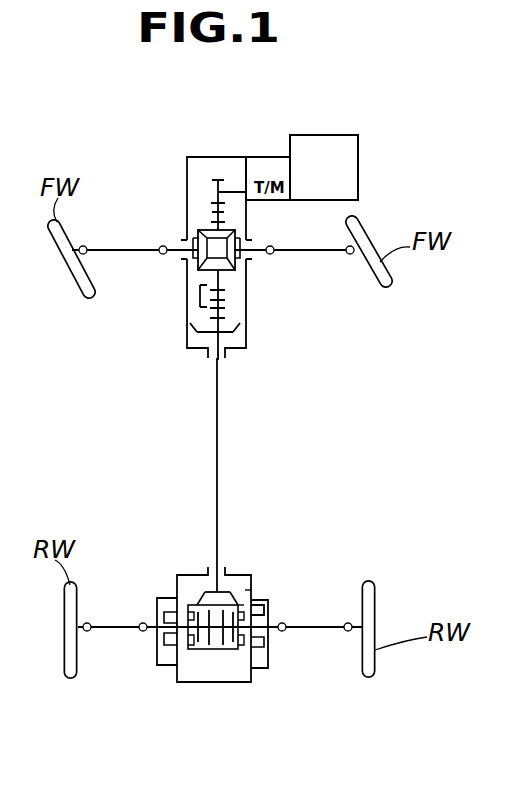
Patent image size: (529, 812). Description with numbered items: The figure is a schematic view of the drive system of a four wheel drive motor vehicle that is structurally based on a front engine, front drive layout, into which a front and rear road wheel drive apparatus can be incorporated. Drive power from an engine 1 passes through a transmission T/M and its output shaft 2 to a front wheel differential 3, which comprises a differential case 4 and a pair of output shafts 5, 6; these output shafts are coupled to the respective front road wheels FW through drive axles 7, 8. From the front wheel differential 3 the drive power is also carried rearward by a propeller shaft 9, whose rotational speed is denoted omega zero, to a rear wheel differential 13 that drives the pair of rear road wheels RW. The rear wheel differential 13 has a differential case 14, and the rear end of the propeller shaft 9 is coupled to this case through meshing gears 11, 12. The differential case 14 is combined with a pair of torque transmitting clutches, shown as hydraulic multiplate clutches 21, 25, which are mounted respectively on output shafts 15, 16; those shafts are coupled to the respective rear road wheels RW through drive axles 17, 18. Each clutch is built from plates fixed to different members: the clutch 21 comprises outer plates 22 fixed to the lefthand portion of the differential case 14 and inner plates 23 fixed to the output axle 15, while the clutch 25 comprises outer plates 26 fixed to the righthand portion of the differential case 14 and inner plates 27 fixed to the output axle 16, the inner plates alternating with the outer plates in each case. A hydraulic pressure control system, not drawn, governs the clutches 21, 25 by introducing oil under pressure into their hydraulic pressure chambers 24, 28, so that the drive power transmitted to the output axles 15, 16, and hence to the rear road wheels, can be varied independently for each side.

The engine 1 is at (316, 134).
The output shaft 2 is at (231, 190).
The front wheel differential 3 is at (196, 217).
The differential case 4 is at (240, 238).
The output shaft 5 is at (172, 253).
The output shaft 6 is at (264, 253).
The drive axle 7 is at (114, 252).
The drive axle 8 is at (322, 253).
The propeller shaft 9 is at (219, 423).
The meshing gear 11 is at (232, 597).
The meshing gear 12 is at (203, 592).
The rear wheel differential 13 is at (209, 690).
The differential case 14 is at (217, 665).
The output shaft 15 is at (154, 632).
The output shaft 16 is at (275, 624).
The drive axle 17 is at (108, 630).
The drive axle 18 is at (318, 628).
The hydraulic multiplate clutch 21 is at (185, 663).
The outer plates 22 is at (175, 592).
The inner plates 23 is at (197, 660).
The hydraulic pressure chamber 24 is at (170, 600).
The hydraulic multiplate clutch 25 is at (251, 592).
The outer plates 26 is at (241, 652).
The inner plates 27 is at (245, 595).
The hydraulic pressure chamber 28 is at (256, 662).